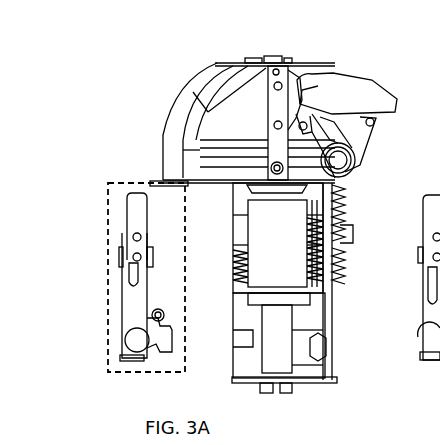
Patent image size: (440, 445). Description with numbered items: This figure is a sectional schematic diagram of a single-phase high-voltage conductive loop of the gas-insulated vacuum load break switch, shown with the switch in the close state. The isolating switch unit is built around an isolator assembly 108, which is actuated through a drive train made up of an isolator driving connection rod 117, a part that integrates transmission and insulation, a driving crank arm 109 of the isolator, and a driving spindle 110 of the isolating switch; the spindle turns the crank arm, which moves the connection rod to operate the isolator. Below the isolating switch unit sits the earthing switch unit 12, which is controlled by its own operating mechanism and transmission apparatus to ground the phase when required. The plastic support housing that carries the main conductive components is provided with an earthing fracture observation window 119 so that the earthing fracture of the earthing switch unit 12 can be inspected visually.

The earthing switch unit 12 is at (105, 185).
The isolator assembly 108 is at (258, 60).
The driving crank arm 109 is at (350, 135).
The driving spindle 110 is at (342, 165).
The isolator driving connection rod 117 is at (362, 92).
The earthing fracture observation window 119 is at (240, 335).